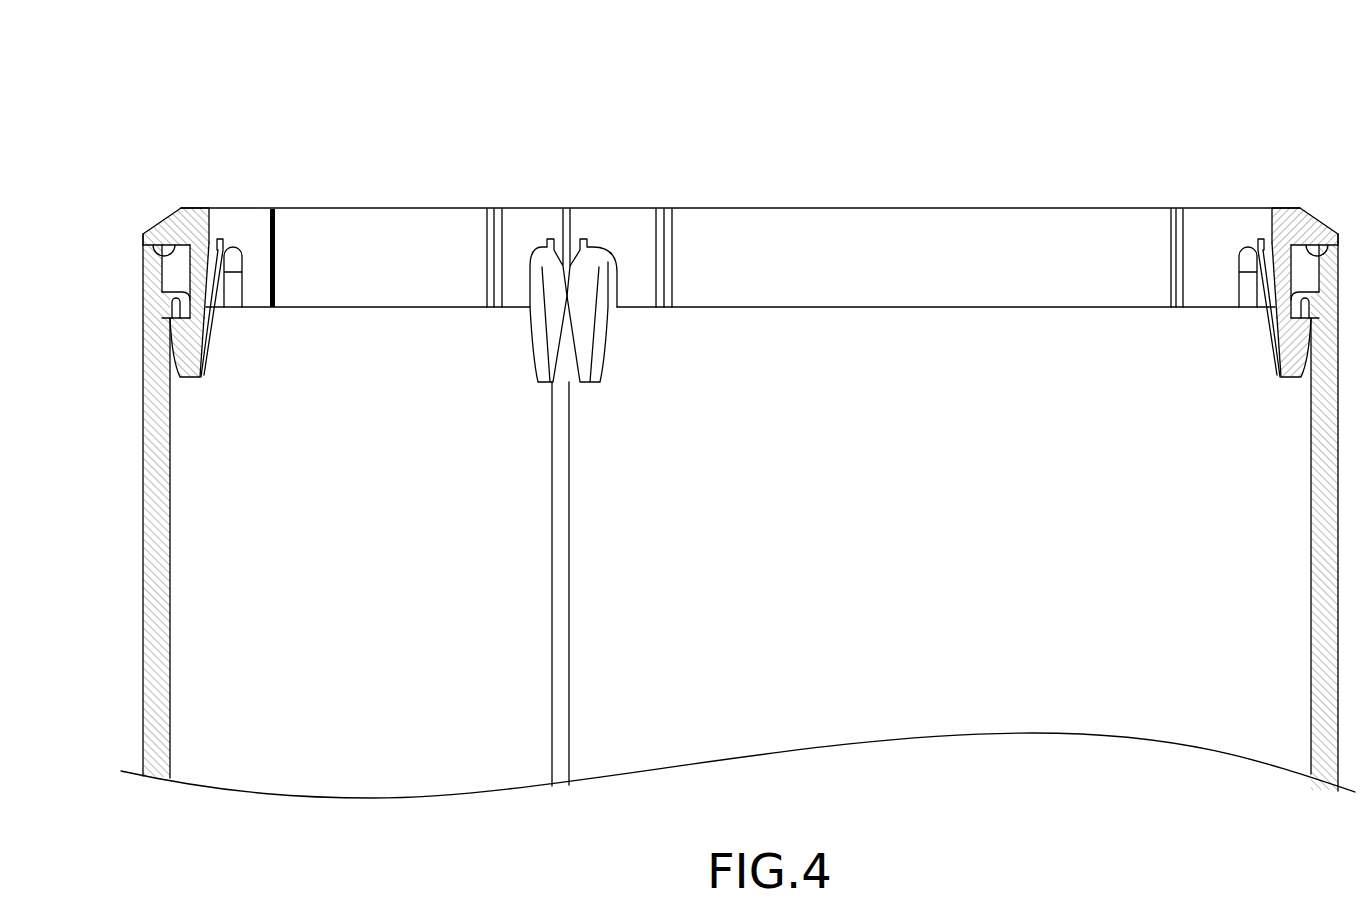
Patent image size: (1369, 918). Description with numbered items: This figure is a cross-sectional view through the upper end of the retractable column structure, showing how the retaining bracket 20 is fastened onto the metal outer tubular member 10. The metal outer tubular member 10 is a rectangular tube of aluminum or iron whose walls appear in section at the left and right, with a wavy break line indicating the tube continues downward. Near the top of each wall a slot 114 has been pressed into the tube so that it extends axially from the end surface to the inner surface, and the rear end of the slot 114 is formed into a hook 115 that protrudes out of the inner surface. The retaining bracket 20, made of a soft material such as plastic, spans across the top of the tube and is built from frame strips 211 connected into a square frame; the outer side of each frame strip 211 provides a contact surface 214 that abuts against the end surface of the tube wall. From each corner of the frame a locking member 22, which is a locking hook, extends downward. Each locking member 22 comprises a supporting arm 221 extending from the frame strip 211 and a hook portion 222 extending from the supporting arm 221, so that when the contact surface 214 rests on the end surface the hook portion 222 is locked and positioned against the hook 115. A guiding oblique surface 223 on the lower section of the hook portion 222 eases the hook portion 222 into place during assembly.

The metal outer tubular member 10 is at (135, 588).
The retaining bracket 20 is at (954, 206).
The locking member 22 is at (208, 347).
The slot 114 is at (172, 273).
The hook 115 is at (172, 293).
The frame strip 211 is at (168, 228).
The contact surface 214 is at (180, 250).
The supporting arm 221 is at (198, 290).
The hook portion 222 is at (177, 320).
The guiding oblique surface 223 is at (183, 345).